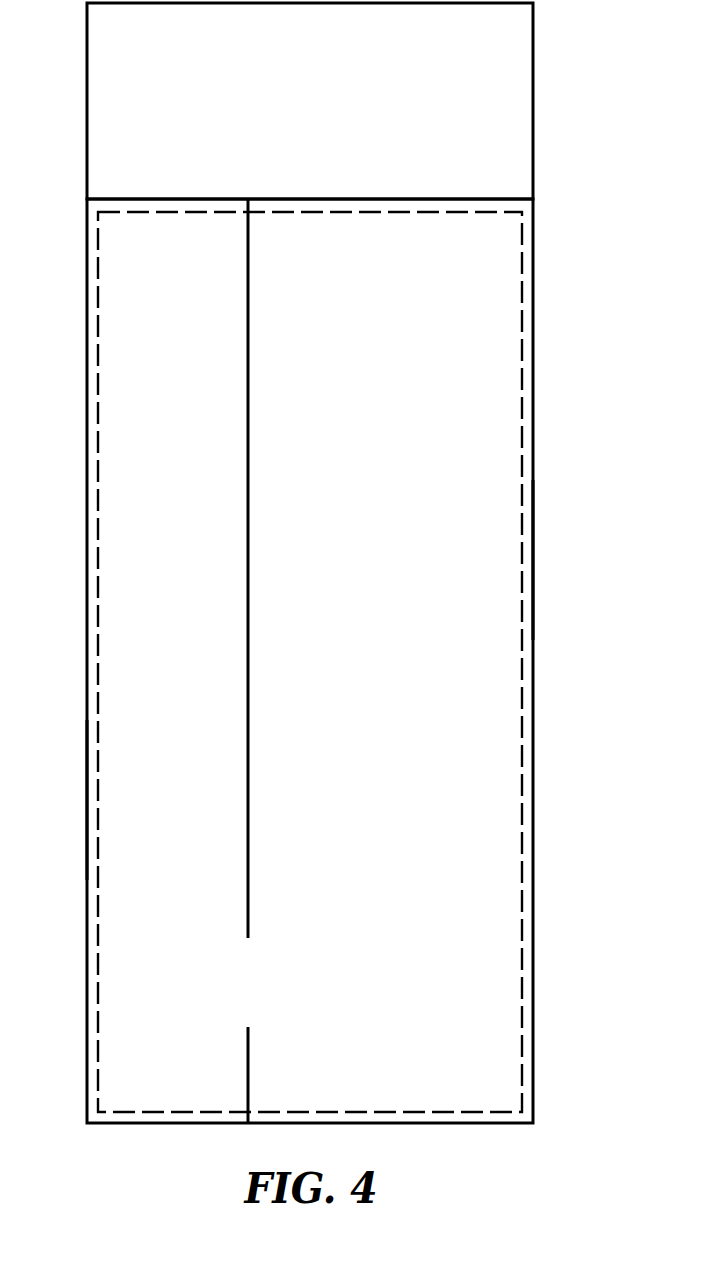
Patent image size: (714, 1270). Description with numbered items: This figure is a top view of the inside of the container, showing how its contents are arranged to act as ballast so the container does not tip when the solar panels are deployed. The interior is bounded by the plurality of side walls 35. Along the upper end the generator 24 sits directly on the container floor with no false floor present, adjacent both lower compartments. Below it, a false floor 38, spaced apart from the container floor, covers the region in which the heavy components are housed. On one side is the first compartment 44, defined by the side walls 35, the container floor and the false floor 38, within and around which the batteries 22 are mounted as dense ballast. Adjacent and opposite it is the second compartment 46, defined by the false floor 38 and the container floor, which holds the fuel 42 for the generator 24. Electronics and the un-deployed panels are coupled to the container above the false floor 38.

The battery 22 is at (488, 368).
The generator 24 is at (525, 89).
The side walls 35 is at (535, 562).
The false floor 38 is at (520, 797).
The fuel 42 is at (130, 365).
The first compartment 44 is at (488, 944).
The second compartment 46 is at (130, 797).